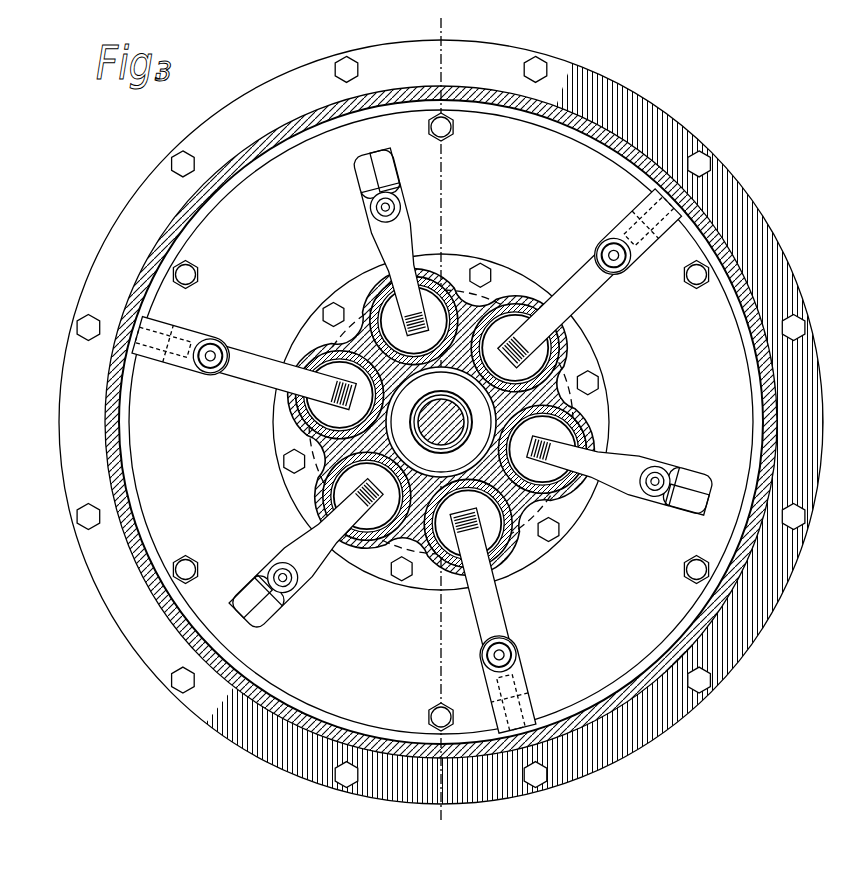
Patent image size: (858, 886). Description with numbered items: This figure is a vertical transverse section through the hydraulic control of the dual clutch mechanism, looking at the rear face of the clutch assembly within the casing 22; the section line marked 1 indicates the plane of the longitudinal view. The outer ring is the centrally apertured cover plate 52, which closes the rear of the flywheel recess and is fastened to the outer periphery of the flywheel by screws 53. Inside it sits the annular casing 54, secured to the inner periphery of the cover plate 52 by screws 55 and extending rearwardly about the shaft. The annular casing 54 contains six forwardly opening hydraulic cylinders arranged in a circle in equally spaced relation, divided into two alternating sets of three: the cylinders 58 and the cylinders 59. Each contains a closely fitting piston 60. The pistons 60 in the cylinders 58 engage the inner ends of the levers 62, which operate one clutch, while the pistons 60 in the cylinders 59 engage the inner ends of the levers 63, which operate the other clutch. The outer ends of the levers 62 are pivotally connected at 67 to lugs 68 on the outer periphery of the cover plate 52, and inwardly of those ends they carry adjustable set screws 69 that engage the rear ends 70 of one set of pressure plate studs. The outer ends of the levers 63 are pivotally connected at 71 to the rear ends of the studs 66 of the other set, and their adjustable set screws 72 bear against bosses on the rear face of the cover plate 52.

The section line 1 is at (458, 18).
The casing 22 is at (628, 708).
The cover plate 52 is at (722, 320).
The screws 53 is at (440, 422).
The annular casing 54 is at (506, 300).
The screws 55 is at (450, 420).
The cylinders 58 is at (456, 425).
The cylinders 59 is at (452, 399).
The pistons 60 is at (437, 427).
The levers 62 is at (412, 454).
The levers 63 is at (466, 394).
The studs 66 is at (476, 383).
The pivotal connection 67 is at (407, 461).
The lugs 68 is at (407, 454).
The adjustable set screws 69 is at (413, 450).
The rear ends of the studs 70 is at (412, 434).
The pivotal connection 71 is at (472, 393).
The adjustable set screws 72 is at (457, 391).